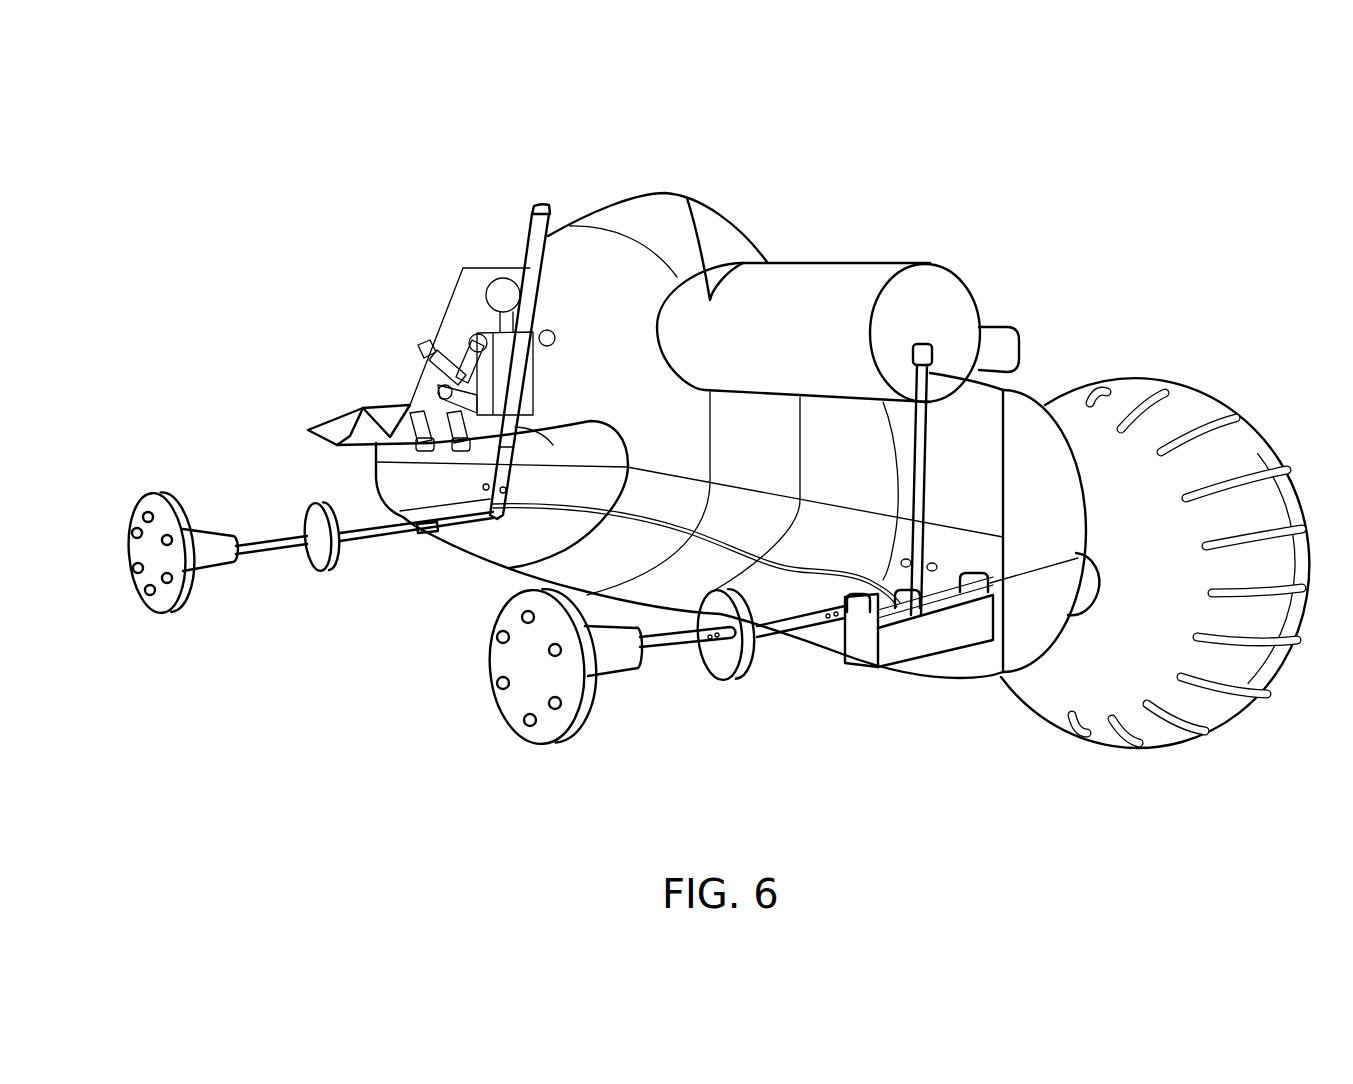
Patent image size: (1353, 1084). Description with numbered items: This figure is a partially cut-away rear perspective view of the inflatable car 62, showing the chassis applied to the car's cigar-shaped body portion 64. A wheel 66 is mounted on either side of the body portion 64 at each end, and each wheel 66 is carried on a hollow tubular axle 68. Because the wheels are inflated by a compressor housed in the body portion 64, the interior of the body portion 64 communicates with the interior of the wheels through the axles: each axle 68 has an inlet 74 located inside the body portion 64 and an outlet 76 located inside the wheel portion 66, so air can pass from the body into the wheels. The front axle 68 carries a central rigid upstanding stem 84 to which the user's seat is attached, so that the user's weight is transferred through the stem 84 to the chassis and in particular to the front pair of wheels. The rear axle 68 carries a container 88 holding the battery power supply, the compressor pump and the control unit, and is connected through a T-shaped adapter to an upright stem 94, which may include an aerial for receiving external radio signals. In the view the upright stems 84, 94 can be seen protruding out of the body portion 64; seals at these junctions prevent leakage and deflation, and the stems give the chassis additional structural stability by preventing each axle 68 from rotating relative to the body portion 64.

The inflatable car 62 is at (713, 150).
The body portion 64 is at (748, 236).
The wheel 66 is at (1125, 745).
The axle 68 is at (650, 652).
The inlet 74 is at (833, 630).
The outlet 76 is at (716, 682).
The upstanding stem 84 is at (535, 237).
The container 88 is at (862, 666).
The upright stem 94 is at (1003, 395).